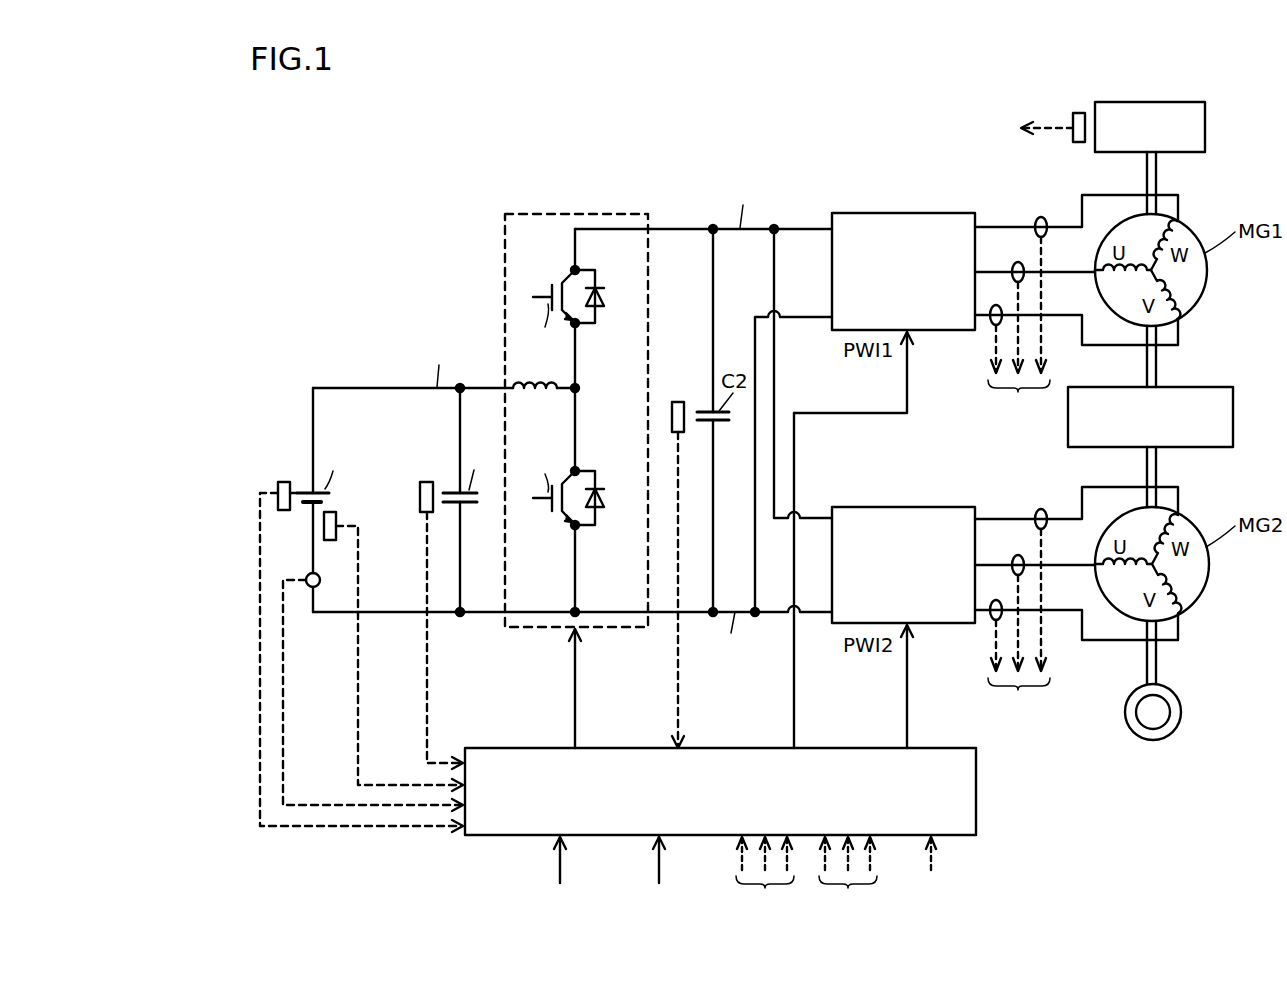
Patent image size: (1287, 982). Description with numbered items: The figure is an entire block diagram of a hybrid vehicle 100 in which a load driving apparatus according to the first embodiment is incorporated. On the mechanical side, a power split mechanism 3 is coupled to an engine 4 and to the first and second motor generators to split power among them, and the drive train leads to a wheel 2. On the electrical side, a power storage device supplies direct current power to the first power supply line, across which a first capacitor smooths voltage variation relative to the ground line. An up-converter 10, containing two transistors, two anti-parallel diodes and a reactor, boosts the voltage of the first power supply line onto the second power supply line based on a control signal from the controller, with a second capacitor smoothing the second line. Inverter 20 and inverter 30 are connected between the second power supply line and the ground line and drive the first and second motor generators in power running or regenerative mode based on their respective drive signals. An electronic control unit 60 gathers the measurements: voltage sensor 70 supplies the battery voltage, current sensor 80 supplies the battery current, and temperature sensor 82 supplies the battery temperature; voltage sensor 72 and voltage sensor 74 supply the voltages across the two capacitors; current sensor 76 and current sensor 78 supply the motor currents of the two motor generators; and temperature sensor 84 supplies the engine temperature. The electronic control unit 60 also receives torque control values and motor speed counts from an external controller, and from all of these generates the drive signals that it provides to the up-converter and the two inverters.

The hybrid vehicle 100 is at (340, 163).
The up-converter 10 is at (577, 214).
The inverter 20 is at (932, 213).
The inverter 30 is at (932, 507).
The electronic control unit 60 is at (976, 790).
The voltage sensor 70 is at (282, 481).
The voltage sensor 72 is at (427, 481).
The voltage sensor 74 is at (678, 401).
The current sensor 76 is at (1041, 217).
The current sensor 78 is at (1041, 509).
The current sensor 80 is at (308, 577).
The temperature sensor 82 is at (339, 519).
The temperature sensor 84 is at (1078, 112).
The engine 4 is at (1188, 102).
The power split mechanism 3 is at (1212, 387).
The wheel 2 is at (1174, 696).